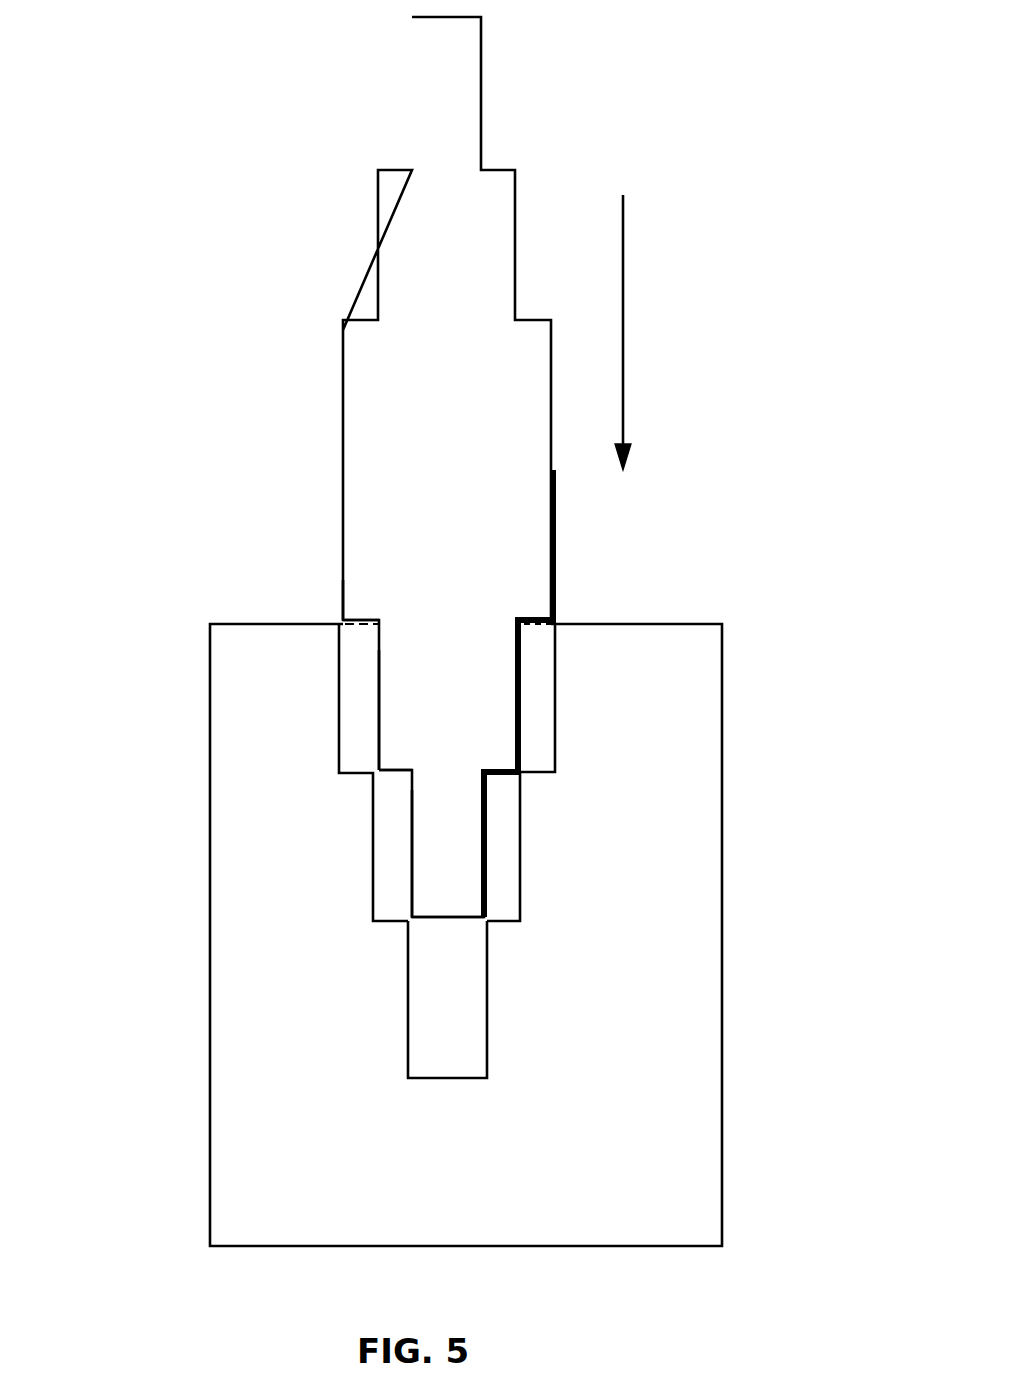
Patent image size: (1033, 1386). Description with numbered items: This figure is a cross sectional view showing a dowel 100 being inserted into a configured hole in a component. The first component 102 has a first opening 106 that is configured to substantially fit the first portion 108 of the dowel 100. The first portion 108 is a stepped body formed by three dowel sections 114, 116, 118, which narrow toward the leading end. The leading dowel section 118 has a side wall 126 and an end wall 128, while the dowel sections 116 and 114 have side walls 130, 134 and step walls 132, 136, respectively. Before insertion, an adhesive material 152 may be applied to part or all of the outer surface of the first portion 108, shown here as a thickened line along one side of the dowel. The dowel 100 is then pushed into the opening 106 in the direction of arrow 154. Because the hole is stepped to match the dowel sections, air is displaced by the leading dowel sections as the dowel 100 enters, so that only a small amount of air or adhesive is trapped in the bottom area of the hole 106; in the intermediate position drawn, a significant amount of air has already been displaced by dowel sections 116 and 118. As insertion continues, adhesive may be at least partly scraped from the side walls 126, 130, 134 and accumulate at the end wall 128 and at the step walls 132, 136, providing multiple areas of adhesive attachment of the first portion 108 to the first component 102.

The dowel 100 is at (313, 388).
The first component 102 is at (209, 986).
The first opening 106 is at (457, 1040).
The first portion 108 is at (343, 537).
The dowel section 114 is at (457, 566).
The dowel section 116 is at (445, 720).
The dowel section 118 is at (452, 847).
The side wall 126 is at (412, 873).
The end wall 128 is at (437, 918).
The side wall 130 is at (379, 720).
The step wall 132 is at (400, 772).
The side wall 134 is at (343, 588).
The step wall 136 is at (357, 627).
The adhesive material 152 is at (553, 585).
The arrow 154 is at (623, 293).